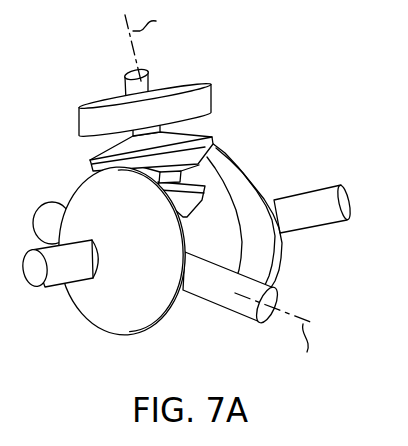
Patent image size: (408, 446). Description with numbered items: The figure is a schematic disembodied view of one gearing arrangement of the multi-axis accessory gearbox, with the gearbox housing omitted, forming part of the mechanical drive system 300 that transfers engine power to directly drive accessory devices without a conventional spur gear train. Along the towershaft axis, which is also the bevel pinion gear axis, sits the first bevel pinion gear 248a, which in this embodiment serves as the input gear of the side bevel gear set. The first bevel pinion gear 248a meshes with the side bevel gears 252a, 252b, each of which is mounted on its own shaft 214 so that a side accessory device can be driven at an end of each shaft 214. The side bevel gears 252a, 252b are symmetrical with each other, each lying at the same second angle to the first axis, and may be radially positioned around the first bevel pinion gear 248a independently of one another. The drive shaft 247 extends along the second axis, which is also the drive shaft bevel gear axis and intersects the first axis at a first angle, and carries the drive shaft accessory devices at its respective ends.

The mechanical drive system 300 is at (203, 192).
The shaft 214 is at (344, 186).
The drive shaft 247 is at (210, 302).
The first bevel pinion gear 248a is at (88, 163).
The side bevel gear 252a is at (93, 306).
The side bevel gear 252b is at (265, 182).